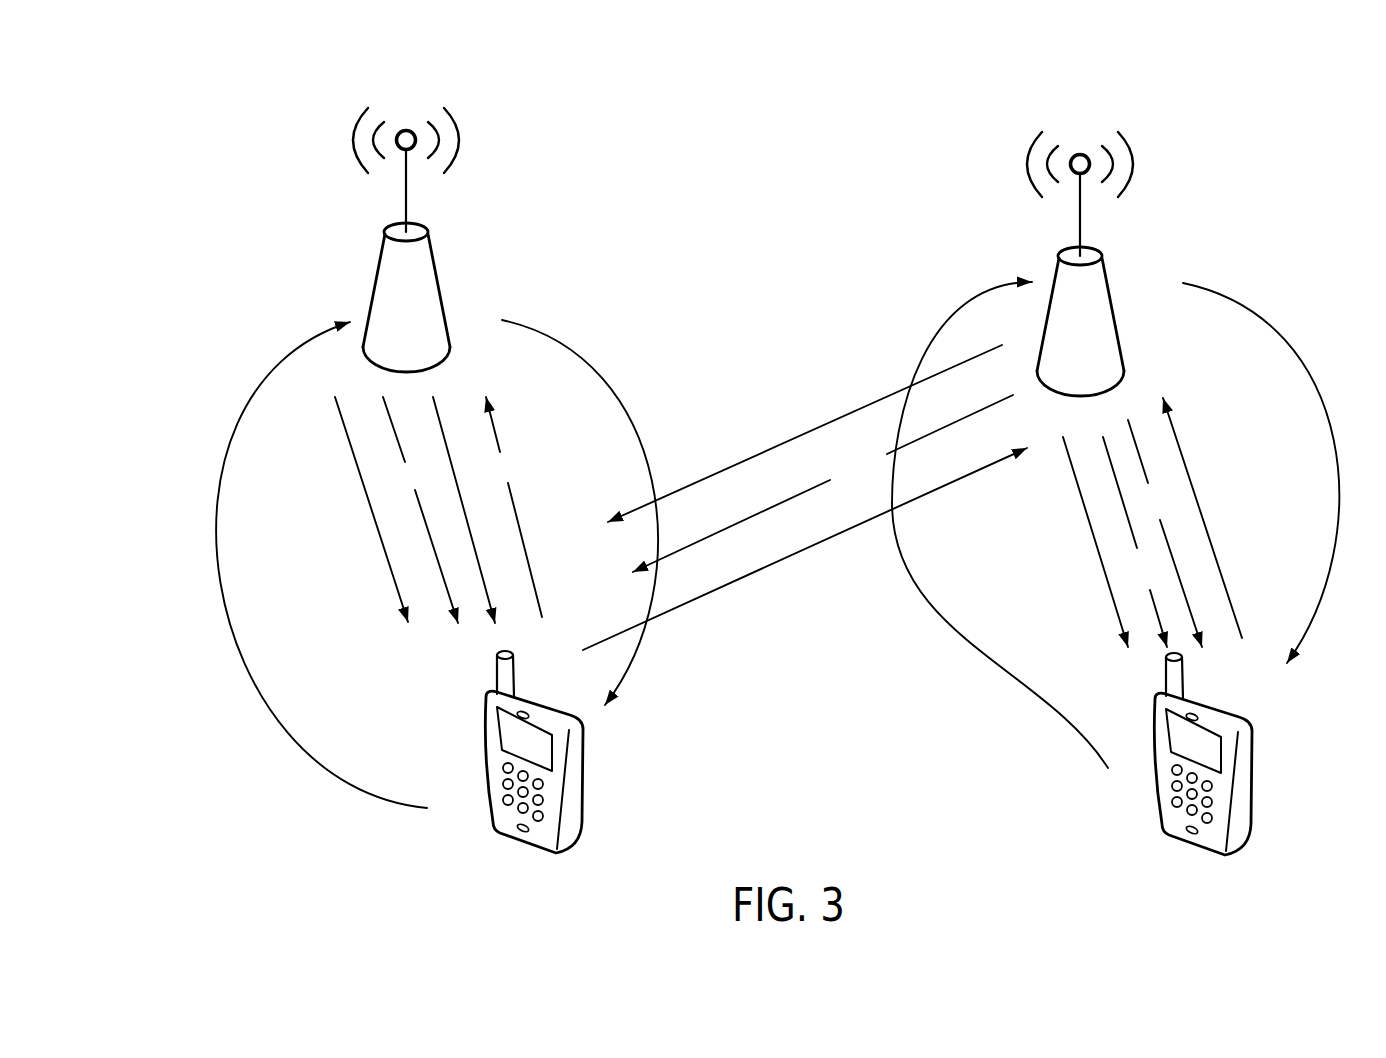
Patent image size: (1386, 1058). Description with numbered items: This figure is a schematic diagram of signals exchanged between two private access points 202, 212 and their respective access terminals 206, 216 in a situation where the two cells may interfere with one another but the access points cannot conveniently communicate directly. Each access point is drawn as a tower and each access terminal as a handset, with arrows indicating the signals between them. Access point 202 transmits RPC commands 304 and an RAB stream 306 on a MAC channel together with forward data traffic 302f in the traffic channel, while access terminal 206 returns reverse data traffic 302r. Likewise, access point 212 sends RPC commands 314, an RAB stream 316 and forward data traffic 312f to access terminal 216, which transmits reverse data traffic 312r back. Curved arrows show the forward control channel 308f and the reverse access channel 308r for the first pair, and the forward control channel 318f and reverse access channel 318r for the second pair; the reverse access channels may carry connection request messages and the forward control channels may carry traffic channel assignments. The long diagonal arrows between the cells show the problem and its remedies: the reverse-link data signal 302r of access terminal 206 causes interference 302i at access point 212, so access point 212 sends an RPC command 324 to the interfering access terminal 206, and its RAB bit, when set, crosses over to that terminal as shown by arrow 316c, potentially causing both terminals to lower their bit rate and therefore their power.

The private access point 202 is at (427, 282).
The private access point 212 is at (1097, 305).
The access terminal 206 is at (530, 845).
The access terminal 216 is at (1178, 820).
The RPC commands 304 is at (358, 493).
The RAB stream 306 is at (420, 513).
The forward data traffic 302f is at (480, 480).
The reverse data traffic 302r is at (523, 552).
The reverse access channel 308r is at (216, 577).
The forward control channel 308f is at (612, 392).
The RPC command 324 is at (805, 433).
The RAB bit crossing arrow 316c is at (823, 483).
The interference 302i is at (805, 549).
The RPC commands 314 is at (1097, 553).
The RAB stream 316 is at (1139, 544).
The forward data traffic 312f is at (1147, 467).
The reverse data traffic 312r is at (1220, 562).
The reverse access channel 318r is at (930, 658).
The forward control channel 318f is at (1300, 357).